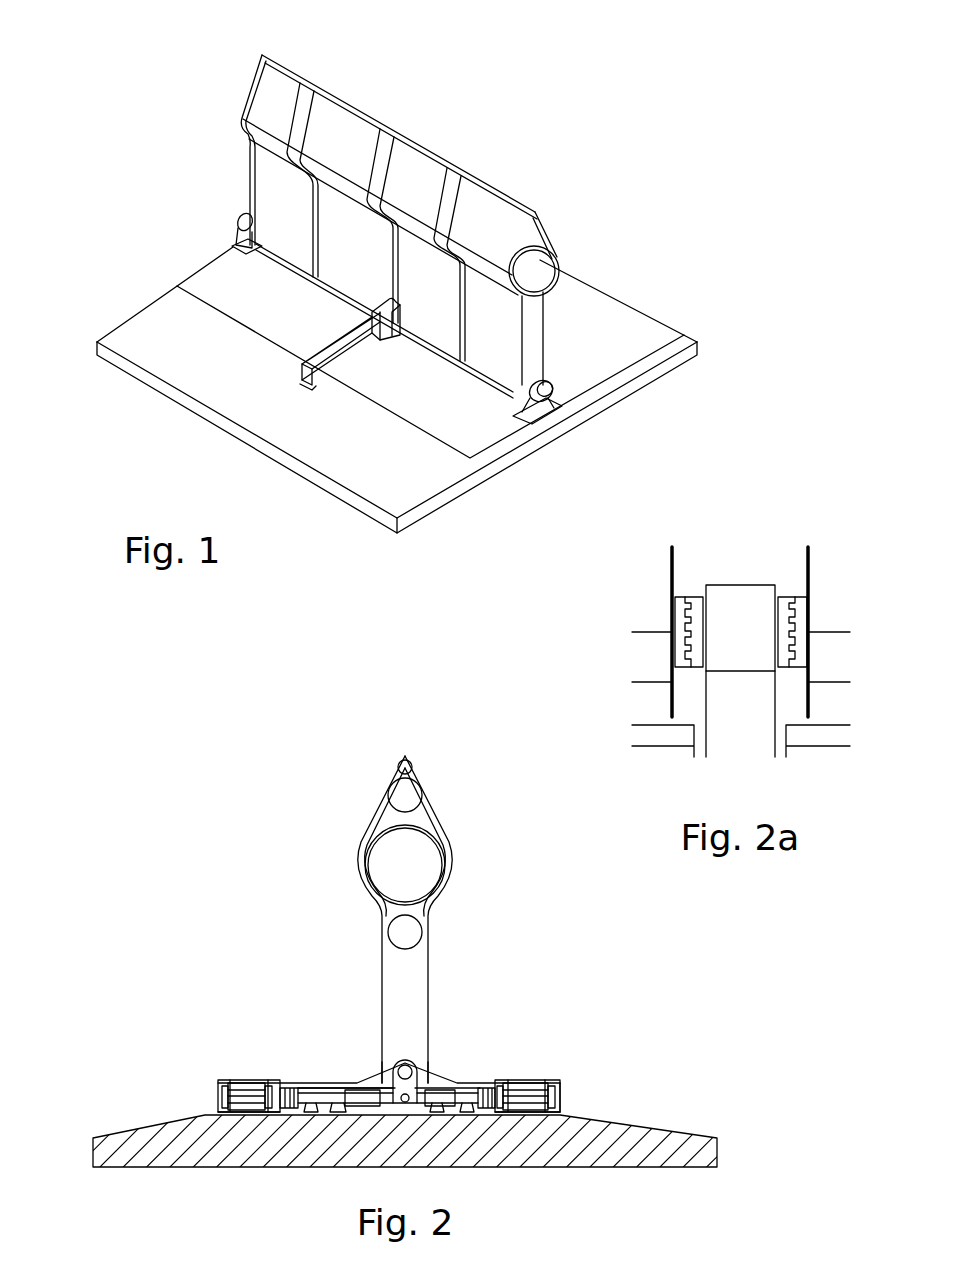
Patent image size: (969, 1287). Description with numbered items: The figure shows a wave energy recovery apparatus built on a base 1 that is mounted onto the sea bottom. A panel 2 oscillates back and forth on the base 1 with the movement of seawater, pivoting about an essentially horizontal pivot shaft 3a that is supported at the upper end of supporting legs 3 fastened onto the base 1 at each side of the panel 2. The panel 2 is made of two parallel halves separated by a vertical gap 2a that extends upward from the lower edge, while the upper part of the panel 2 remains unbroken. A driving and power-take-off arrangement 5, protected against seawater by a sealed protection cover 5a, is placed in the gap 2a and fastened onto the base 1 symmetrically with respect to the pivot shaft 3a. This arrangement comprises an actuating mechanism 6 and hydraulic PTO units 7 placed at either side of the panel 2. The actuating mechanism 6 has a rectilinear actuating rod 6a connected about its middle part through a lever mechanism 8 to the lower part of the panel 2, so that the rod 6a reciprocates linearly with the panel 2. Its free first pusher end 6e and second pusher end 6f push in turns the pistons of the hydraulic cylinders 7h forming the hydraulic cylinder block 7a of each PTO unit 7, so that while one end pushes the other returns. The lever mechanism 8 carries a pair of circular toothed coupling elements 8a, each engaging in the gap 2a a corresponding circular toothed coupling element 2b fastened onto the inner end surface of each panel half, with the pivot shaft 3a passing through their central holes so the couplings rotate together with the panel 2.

In FIG. 1, the base 1 is at (607, 302).
In FIG. 2, the base 1 is at (112, 1138).
In FIG. 2A, the base 1 is at (640, 726).
In FIG. 1, the panel 2 is at (433, 168).
In FIG. 2, the panel 2 is at (390, 790).
In FIG. 2A, the panel 2 is at (672, 568).
In FIG. 1, the vertical gap 2a is at (387, 285).
In FIG. 2A, the circular toothed coupling element 2b is at (683, 598).
In FIG. 1, the supporting leg 3 is at (237, 232).
In FIG. 1, the pivot shaft 3a is at (548, 400).
In FIG. 2, the pivot shaft 3a is at (405, 1060).
In FIG. 1, the driving and power-take-off arrangement 5 is at (331, 334).
In FIG. 2, the driving and power-take-off arrangement 5 is at (454, 1010).
In FIG. 1, the sealed protection cover 5a is at (318, 378).
In FIG. 2, the sealed protection cover 5a is at (545, 1080).
In FIG. 2A, the sealed protection cover 5a is at (740, 588).
In FIG. 2, the actuating mechanism 6 is at (449, 1063).
In FIG. 2, the actuating rod 6a is at (352, 1085).
In FIG. 2, the first pusher end 6e is at (313, 1090).
In FIG. 2, the second pusher end 6f is at (460, 1088).
In FIG. 2, the hydraulic PTO unit 7 is at (232, 966).
In FIG. 2, the hydraulic cylinder block 7a is at (240, 1076).
In FIG. 2, the hydraulic cylinder 7h is at (218, 1102).
In FIG. 2, the lever mechanism 8 is at (358, 1053).
In FIG. 2A, the circular coupling element 8a is at (790, 598).